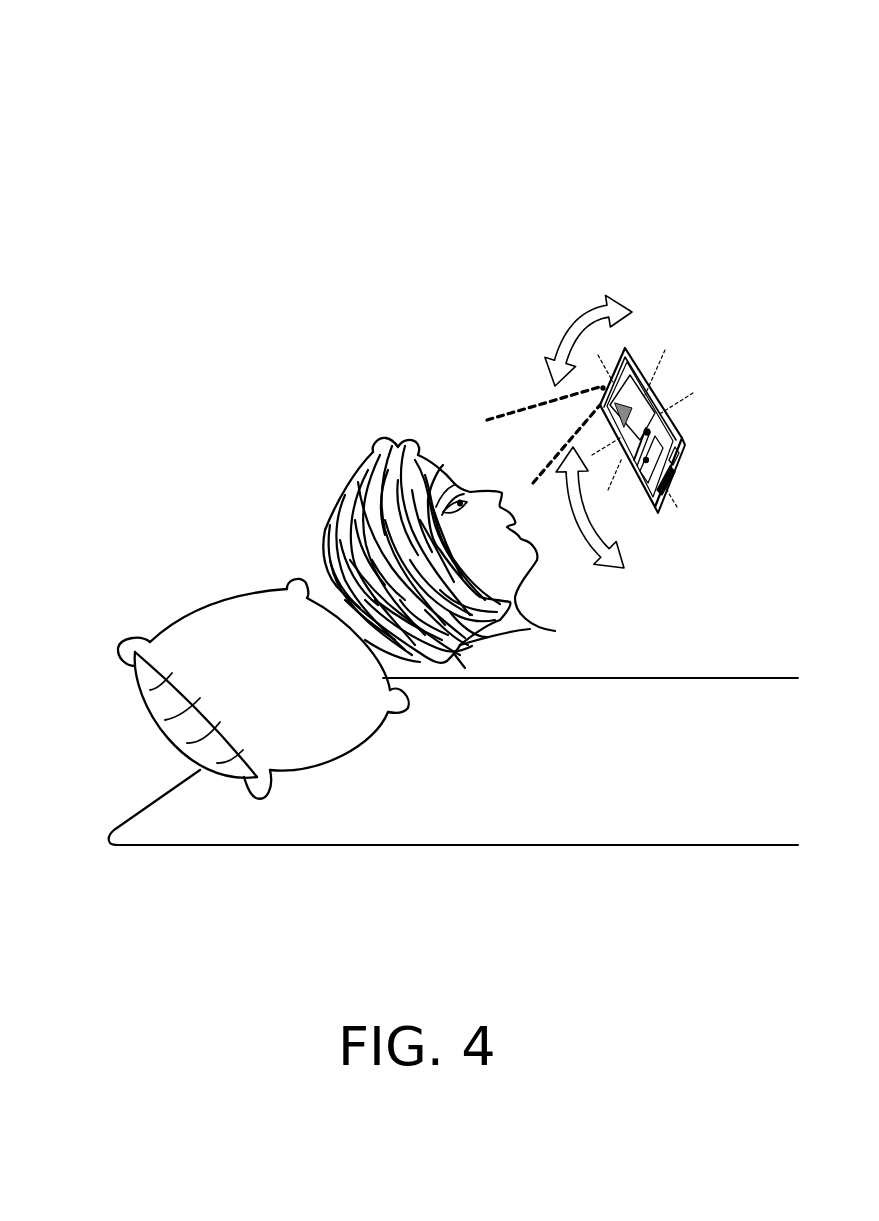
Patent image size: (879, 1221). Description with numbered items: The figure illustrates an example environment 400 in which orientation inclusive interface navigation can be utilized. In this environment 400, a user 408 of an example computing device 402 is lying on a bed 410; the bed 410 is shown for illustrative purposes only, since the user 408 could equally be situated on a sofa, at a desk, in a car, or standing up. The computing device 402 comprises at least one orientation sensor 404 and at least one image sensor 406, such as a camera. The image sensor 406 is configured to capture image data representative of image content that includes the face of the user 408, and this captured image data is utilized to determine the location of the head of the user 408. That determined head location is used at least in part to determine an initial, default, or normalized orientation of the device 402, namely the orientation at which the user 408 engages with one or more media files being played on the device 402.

The example environment 400 is at (70, 78).
The computing device 402 is at (628, 348).
The orientation sensor 404 is at (633, 413).
The image sensor 406 is at (607, 390).
The user 408 is at (447, 392).
The bed 410 is at (113, 585).